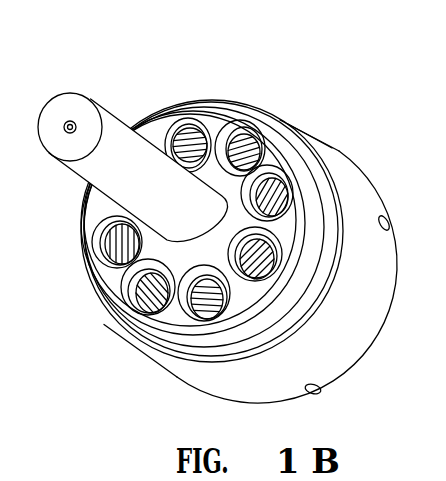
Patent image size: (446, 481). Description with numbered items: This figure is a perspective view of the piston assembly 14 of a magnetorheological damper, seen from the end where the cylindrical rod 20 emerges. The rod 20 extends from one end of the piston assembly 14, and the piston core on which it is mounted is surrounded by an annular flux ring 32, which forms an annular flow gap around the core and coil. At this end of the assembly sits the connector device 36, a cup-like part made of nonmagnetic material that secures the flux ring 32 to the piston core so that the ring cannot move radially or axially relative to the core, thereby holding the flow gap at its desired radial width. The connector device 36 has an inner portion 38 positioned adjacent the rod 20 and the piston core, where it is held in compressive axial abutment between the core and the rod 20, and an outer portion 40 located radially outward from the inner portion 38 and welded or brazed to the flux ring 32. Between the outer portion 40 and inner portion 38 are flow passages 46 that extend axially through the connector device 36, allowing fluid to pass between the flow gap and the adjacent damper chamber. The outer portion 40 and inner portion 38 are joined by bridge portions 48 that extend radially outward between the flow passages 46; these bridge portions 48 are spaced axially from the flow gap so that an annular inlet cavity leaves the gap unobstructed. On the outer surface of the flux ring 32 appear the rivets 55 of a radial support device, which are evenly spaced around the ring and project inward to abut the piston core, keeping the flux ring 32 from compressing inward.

The piston assembly 14 is at (312, 134).
The cylindrical rod 20 is at (77, 170).
The annular flux ring 32 is at (343, 180).
The connector device 36 is at (209, 90).
The inner portion 38 is at (150, 243).
The outer portion 40 is at (276, 136).
The flow passages 46 is at (172, 124).
The bridge portions 48 is at (182, 130).
The rivets 55 is at (388, 222).